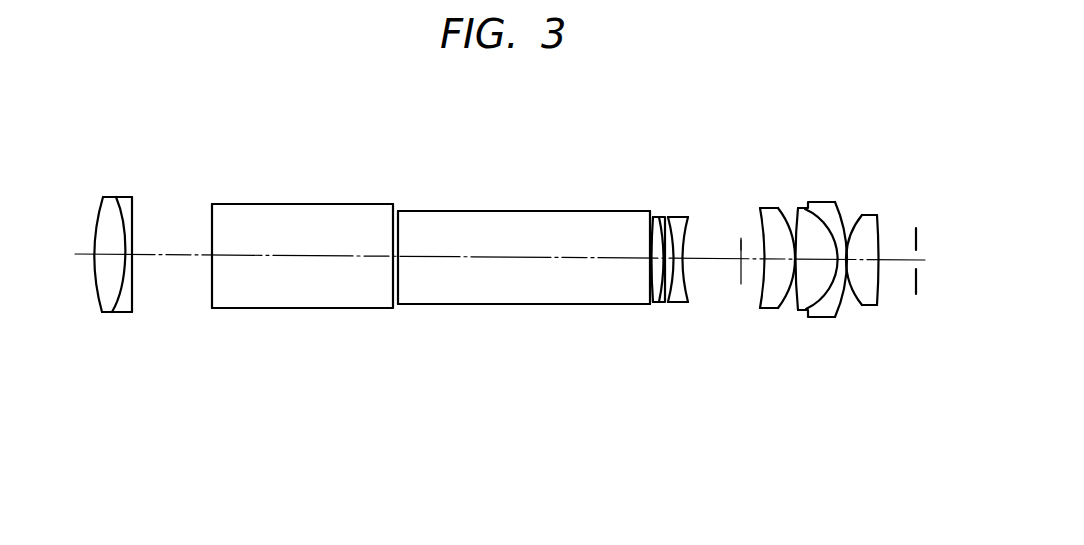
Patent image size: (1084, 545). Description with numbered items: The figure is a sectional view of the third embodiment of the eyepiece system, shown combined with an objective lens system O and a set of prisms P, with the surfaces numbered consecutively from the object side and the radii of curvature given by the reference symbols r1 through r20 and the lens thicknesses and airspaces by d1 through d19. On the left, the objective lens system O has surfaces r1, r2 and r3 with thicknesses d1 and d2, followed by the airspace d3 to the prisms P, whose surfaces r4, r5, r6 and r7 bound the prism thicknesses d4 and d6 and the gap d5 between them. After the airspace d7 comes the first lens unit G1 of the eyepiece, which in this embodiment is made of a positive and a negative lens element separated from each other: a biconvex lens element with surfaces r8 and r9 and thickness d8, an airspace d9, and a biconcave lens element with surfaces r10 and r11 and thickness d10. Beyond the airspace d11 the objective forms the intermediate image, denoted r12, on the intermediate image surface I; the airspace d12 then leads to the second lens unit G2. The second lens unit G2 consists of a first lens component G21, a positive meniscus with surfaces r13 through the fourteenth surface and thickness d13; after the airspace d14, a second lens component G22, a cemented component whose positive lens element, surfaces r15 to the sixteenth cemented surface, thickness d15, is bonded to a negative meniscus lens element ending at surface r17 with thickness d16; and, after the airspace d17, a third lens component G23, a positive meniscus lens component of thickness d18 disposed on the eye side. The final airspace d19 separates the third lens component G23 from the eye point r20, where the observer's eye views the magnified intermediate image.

The objective lens system O is at (128, 248).
The prisms P is at (422, 269).
The first lens unit G1 is at (672, 265).
The second lens unit G2 is at (821, 286).
The first lens component G21 is at (764, 279).
The second lens component G22 is at (815, 271).
The third lens component G23 is at (877, 298).
The intermediate image surface I is at (735, 282).
The radius of curvature of first lens surface r1 is at (104, 198).
The radius of curvature of second lens surface r2 is at (123, 189).
The radius of curvature of third lens surface r3 is at (148, 202).
The radius of curvature of fourth surface r4 is at (204, 207).
The radius of curvature of fifth surface r5 is at (382, 212).
The radius of curvature of sixth surface r6 is at (415, 210).
The radius of curvature of seventh surface r7 is at (625, 220).
The radius of curvature of eighth surface r8 is at (640, 208).
The radius of curvature of ninth surface r9 is at (654, 202).
The radius of curvature of tenth surface r10 is at (683, 213).
The radius of curvature of eleventh surface r11 is at (701, 198).
The intermediate image r12 is at (732, 197).
The radius of curvature of thirteenth surface r13 is at (749, 196).
The radius of curvature of fifteenth surface r15 is at (790, 190).
The radius of curvature of seventeenth surface r17 is at (840, 192).
The eye point r20 is at (904, 181).
The thickness d1 is at (120, 347).
The thickness d2 is at (145, 345).
The airspace d3 is at (176, 308).
The thickness d4 is at (275, 318).
The airspace d5 is at (416, 335).
The thickness d6 is at (506, 314).
The airspace d7 is at (626, 313).
The thickness d8 is at (641, 322).
The airspace d9 is at (669, 319).
The thickness d10 is at (698, 309).
The airspace d11 is at (713, 334).
The airspace d12 is at (749, 314).
The thickness d13 is at (757, 333).
The airspace d14 is at (789, 323).
The thickness d15 is at (800, 345).
The thickness d16 is at (832, 333).
The airspace d17 is at (850, 323).
The thickness d18 is at (868, 345).
The airspace d19 is at (893, 320).